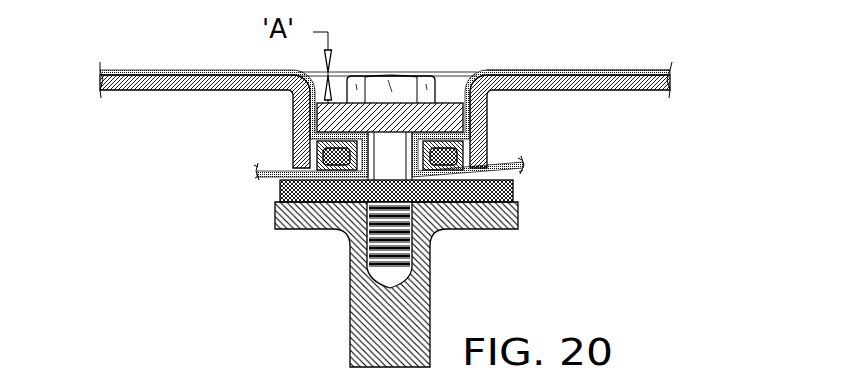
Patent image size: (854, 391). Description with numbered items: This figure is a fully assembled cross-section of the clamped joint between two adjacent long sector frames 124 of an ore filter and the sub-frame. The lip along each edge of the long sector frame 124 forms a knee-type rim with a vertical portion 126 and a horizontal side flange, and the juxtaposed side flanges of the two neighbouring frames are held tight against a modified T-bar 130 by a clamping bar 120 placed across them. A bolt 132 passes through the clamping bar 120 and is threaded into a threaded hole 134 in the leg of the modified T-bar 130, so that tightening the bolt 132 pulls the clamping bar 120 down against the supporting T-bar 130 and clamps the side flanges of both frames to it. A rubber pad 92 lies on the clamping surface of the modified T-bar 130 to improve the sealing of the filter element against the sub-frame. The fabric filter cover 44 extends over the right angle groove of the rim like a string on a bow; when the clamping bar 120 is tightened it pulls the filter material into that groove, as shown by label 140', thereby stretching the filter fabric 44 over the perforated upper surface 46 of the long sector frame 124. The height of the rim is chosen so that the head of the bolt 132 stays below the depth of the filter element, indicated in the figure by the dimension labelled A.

The fabric filter cover 44 is at (612, 70).
The perforated upper surface 46 is at (625, 92).
The long sector frame 124 is at (178, 92).
The vertical portion 126 is at (293, 118).
The clamping bar 120 is at (450, 102).
The bolt 132 is at (436, 97).
The threaded hole 134 is at (352, 245).
The modified T-bar 130 is at (350, 318).
The filter material pulled into right angle groove 140' is at (385, 125).
The rubber pad 92 is at (515, 191).